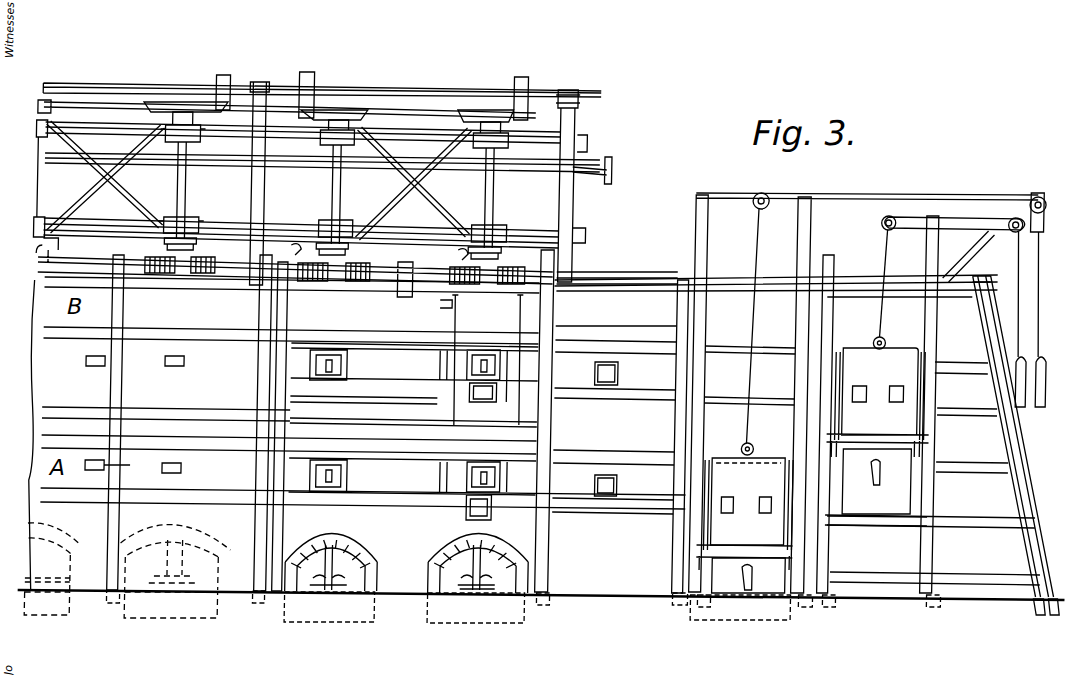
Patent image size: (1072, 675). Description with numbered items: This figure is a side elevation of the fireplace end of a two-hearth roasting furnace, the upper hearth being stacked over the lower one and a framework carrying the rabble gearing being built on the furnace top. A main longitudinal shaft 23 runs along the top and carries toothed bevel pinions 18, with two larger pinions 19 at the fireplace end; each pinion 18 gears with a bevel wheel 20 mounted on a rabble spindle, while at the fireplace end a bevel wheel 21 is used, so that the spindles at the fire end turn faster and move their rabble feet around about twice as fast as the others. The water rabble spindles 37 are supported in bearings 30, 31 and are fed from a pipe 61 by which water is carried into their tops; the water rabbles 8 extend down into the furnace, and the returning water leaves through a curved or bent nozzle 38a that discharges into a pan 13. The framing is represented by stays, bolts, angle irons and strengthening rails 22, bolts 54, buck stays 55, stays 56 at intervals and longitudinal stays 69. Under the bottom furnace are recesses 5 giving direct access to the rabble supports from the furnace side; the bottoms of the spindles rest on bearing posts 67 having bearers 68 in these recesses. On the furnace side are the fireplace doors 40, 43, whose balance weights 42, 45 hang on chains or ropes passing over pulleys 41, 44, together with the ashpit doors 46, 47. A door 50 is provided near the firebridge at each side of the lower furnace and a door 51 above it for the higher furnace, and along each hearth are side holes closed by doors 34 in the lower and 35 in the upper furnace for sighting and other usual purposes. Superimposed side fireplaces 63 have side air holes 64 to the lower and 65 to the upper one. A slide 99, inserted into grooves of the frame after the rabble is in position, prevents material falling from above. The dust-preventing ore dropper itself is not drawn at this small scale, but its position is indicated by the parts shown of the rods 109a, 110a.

The recess 5 is at (356, 573).
The water rabble 8 is at (200, 251).
The pan 13 is at (66, 262).
The toothed bevel pinion 18 is at (214, 80).
The larger pinion 19 is at (316, 84).
The bevel wheel 20 is at (135, 101).
The bevel wheel 21 is at (455, 113).
The stays, bolts, angle irons and strengthening rails 22 is at (580, 126).
The main longitudinal shaft 23 is at (398, 92).
The bearing 30 is at (190, 140).
The bearing 31 is at (189, 192).
The closing door 34 is at (442, 474).
The closing door 35 is at (360, 360).
The water rabble spindle 37 is at (170, 190).
The curved or bent nozzle 38a is at (335, 261).
The door 40 is at (745, 506).
The pulley 41 is at (765, 215).
The balance weight 42 is at (1054, 430).
The door 43 is at (878, 397).
The pulley 44 is at (892, 232).
The balance weight 45 is at (1047, 410).
The ashpit door 46 is at (815, 589).
The ashpit door 47 is at (877, 487).
The door 50 is at (624, 486).
The door 51 is at (628, 372).
The bolt 54 is at (618, 272).
The buck stay 55 is at (1027, 492).
The stay 56 is at (130, 308).
The pipe 61 is at (598, 180).
The side fireplace 63 is at (45, 412).
The side air hole 64 is at (166, 470).
The side air hole 65 is at (90, 366).
The bearing post 67 is at (476, 572).
The bearer 68 is at (303, 580).
The longitudinal stay 69 is at (45, 283).
The slide 99 is at (349, 405).
The rod 109a is at (427, 360).
The rod 110a is at (495, 360).